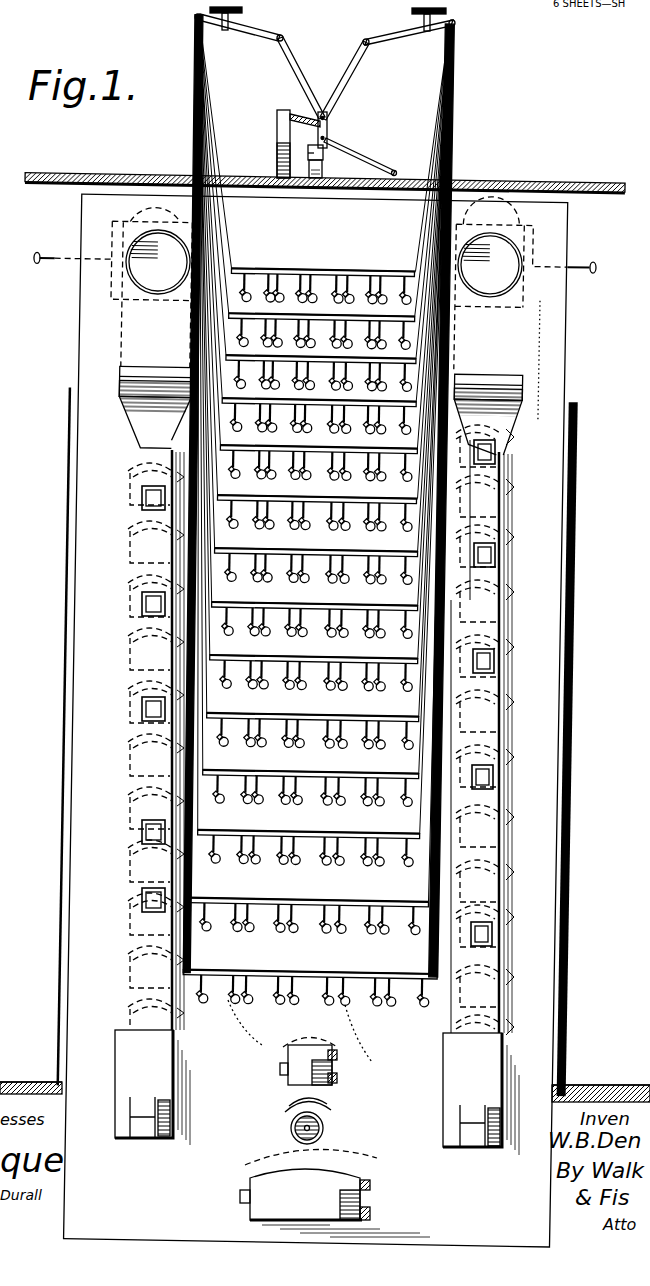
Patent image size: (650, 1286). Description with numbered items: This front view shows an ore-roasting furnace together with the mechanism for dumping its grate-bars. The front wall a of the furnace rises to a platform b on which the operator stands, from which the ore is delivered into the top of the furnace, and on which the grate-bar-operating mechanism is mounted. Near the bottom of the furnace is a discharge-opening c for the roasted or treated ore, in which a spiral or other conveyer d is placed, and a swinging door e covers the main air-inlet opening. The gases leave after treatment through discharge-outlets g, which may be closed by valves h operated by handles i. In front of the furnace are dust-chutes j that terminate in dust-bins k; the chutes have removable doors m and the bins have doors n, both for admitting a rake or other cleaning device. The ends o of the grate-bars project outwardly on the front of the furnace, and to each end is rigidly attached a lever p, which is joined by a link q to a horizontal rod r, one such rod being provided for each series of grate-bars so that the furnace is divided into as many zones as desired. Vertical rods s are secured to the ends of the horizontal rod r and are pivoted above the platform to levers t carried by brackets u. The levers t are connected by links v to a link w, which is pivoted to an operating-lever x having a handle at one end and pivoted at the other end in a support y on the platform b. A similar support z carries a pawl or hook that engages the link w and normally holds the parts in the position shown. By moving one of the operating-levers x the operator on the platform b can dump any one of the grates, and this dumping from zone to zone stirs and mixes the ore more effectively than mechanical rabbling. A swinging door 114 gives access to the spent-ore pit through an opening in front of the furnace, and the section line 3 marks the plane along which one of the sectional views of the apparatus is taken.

The bracket u is at (238, 25).
The lever t is at (253, 44).
The link v is at (342, 70).
The link w is at (330, 125).
The operating-lever x is at (358, 152).
The support y is at (280, 132).
The swinging door 114 is at (308, 146).
The support z is at (313, 179).
The platform b is at (494, 181).
The front wall a is at (566, 398).
The discharge-outlet g is at (323, 263).
The valve h is at (104, 303).
The handle i is at (44, 260).
The removable door m is at (142, 603).
The dust-chute j is at (128, 806).
The dust-bin k is at (317, 1092).
The door n is at (141, 1130).
The section line 3 is at (193, 967).
The horizontal rod r is at (245, 971).
The link q is at (305, 972).
The vertical rod s is at (436, 933).
The lever p is at (300, 993).
The grate-bar end o is at (318, 1042).
The conveyer d is at (290, 1130).
The discharge-opening c is at (326, 1116).
The swinging door e is at (345, 1192).